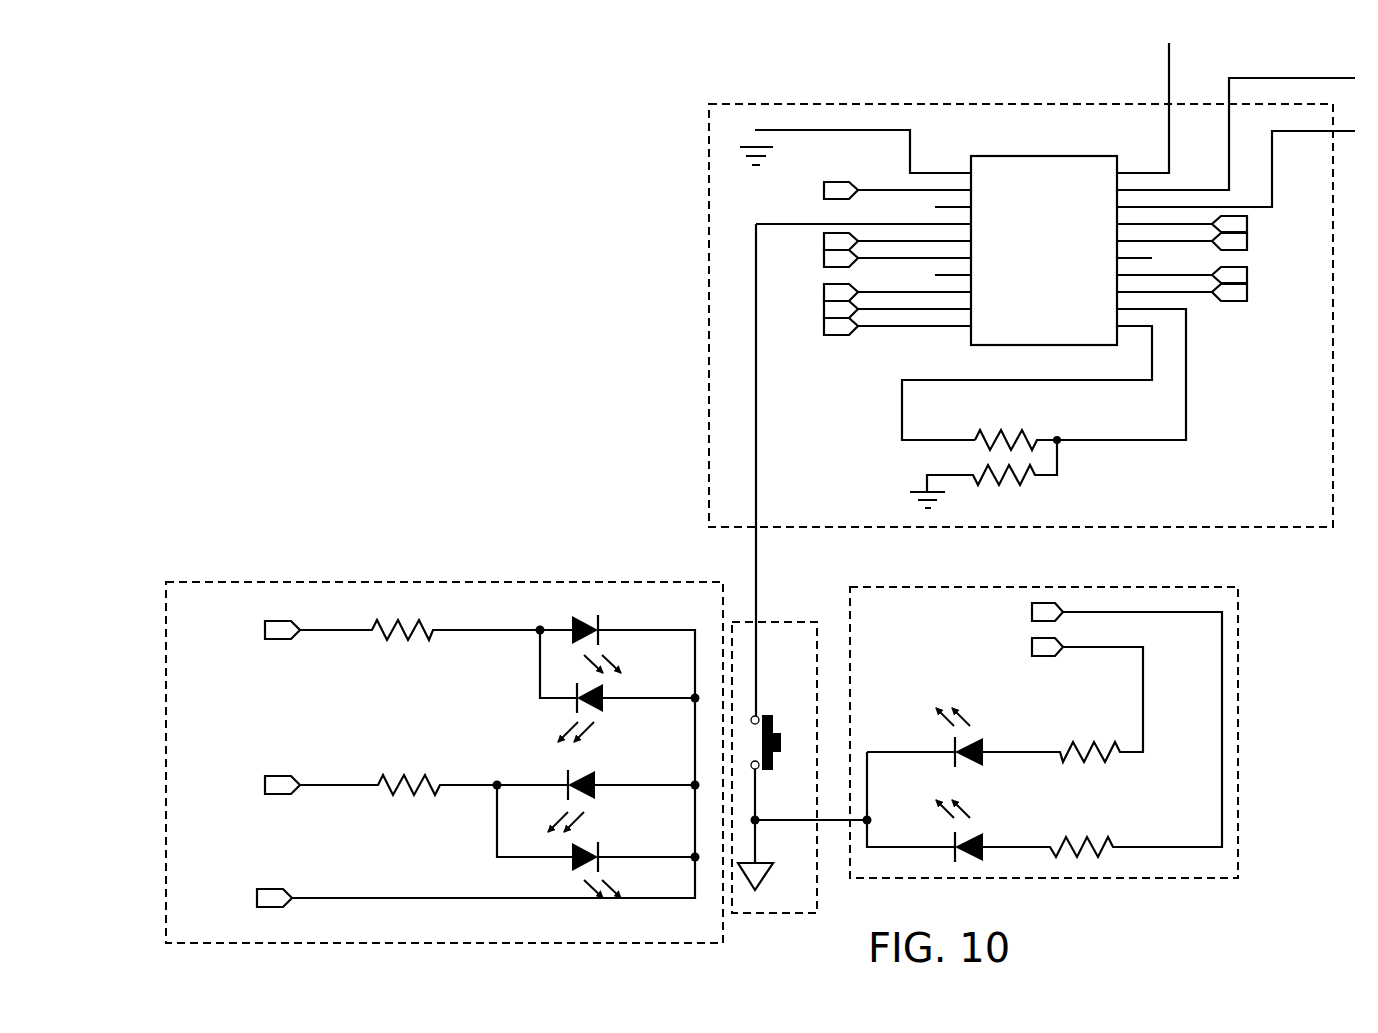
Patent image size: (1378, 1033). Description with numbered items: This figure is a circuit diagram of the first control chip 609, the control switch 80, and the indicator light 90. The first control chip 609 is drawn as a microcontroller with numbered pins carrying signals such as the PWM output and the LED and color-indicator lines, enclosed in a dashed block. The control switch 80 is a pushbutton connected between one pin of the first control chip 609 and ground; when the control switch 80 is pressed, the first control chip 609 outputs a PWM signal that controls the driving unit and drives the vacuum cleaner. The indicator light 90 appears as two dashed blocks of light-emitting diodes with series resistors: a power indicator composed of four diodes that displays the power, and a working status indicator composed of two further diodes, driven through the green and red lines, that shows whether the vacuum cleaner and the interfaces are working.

The first control chip 609 is at (1028, 103).
The indicator light 90 is at (466, 580).
The control switch 80 is at (775, 620).